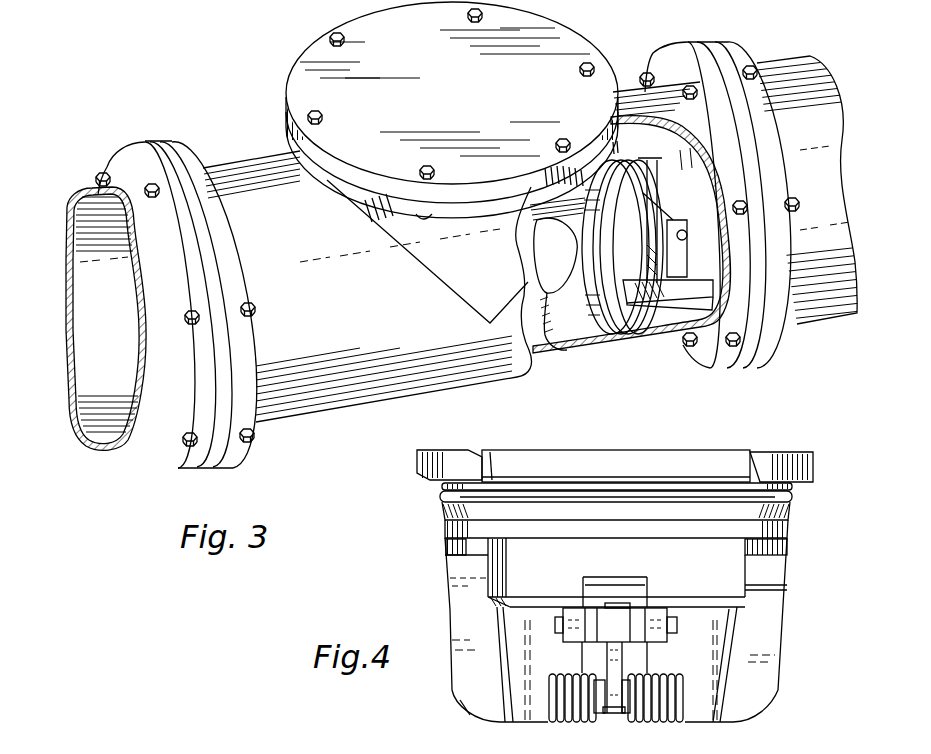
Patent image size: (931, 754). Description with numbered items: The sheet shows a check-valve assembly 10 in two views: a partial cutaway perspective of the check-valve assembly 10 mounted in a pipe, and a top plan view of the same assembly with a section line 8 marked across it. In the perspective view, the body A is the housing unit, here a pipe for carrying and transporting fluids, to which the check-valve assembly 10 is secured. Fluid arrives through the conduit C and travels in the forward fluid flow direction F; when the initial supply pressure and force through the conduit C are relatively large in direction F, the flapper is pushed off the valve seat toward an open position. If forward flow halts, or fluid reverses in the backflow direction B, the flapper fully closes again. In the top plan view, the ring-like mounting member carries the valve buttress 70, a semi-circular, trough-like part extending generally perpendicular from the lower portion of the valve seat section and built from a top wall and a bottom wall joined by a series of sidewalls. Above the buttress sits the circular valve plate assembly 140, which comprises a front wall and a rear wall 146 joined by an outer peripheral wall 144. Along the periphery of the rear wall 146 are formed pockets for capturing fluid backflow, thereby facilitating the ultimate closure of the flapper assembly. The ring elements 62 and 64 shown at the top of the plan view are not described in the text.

In FIG. 3, the body A is at (337, 393).
In FIG. 3, the backflow direction B is at (862, 210).
In FIG. 3, the conduit C is at (105, 327).
In FIG. 3, the forward fluid flow direction F is at (95, 279).
In FIG. 3, the check-valve assembly 10 is at (563, 366).
In FIG. 4, the section line 8- 8 is at (598, 425).
In FIG. 4, the upper seal ring 62 is at (425, 496).
In FIG. 4, the seal ring 64 is at (792, 497).
In FIG. 4, the valve buttress 70 is at (760, 672).
In FIG. 4, the valve plate assembly 140 is at (730, 572).
In FIG. 4, the outer peripheral wall 144 is at (727, 547).
In FIG. 4, the rear wall 146 is at (187, 749).